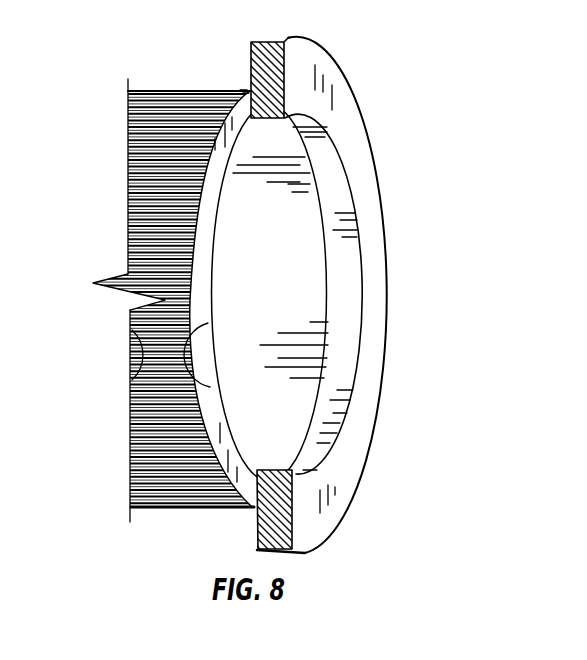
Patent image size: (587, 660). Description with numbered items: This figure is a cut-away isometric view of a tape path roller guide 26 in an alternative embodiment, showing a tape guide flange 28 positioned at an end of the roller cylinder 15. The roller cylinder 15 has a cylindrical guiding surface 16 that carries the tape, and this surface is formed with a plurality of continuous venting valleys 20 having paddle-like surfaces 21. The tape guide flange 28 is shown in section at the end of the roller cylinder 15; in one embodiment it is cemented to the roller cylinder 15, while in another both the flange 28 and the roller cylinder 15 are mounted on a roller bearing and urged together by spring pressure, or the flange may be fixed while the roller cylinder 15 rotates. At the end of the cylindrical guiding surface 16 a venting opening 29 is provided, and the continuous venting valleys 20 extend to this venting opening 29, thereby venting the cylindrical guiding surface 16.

The roller cylinder 15 is at (228, 200).
The cylindrical guiding surface 16 is at (174, 82).
The venting valleys 20 is at (132, 330).
The paddle-like surfaces 21 is at (208, 325).
The tape path roller guide 26 is at (324, 290).
The tape guide flange 28 is at (382, 217).
The venting opening 29 is at (250, 507).